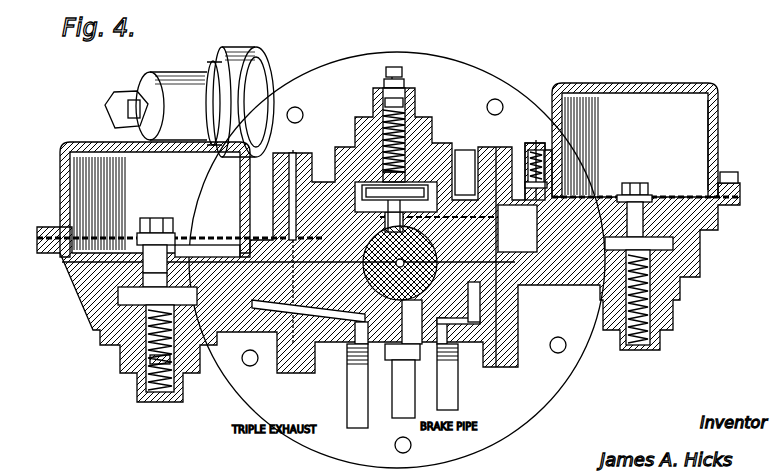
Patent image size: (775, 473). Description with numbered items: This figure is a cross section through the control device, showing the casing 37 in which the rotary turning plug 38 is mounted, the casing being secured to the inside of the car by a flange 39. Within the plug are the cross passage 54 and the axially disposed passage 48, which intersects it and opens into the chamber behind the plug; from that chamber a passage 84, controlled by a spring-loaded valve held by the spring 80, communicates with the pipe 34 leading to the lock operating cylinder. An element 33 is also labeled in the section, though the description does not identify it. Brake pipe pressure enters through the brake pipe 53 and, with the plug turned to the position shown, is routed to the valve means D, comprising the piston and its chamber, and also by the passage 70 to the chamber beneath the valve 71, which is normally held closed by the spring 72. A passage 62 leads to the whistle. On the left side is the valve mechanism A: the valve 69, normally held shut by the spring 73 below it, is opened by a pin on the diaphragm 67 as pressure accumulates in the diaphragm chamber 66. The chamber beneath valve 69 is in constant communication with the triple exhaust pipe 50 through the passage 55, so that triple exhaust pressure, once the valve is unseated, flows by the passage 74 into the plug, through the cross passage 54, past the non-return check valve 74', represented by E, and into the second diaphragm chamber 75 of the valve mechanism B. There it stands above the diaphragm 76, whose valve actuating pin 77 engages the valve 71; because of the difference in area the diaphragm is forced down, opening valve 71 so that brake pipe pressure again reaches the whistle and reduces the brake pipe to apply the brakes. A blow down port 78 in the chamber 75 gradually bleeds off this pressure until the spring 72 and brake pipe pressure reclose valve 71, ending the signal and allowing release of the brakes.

The slide valve 33 is at (396, 207).
The pipe 34 is at (452, 396).
The casing 37 is at (320, 180).
The rotary valve or turning plug 38 is at (408, 360).
The flange 39 is at (440, 62).
The axially disposed passage 48 is at (436, 240).
The triple exhaust pipe 50 is at (346, 393).
The brake pipe 53 is at (400, 410).
The cross passage 54 is at (375, 345).
The passage 55 is at (268, 320).
The passage 62 is at (460, 175).
The diaphragm chamber 66 is at (155, 199).
The diaphragm 67 is at (200, 237).
The valve 69 is at (103, 336).
The passage 70 is at (571, 256).
The valve 71 is at (660, 237).
The spring 72 is at (668, 310).
The spring 73 is at (145, 372).
The passage 74 is at (237, 325).
The non-return check valve 74' is at (523, 157).
The second diaphragm chamber 75 is at (655, 100).
The diaphragm 76 is at (605, 195).
The valve actuating pin 77 is at (652, 196).
The blow down port 78 is at (716, 115).
The spring 80 is at (420, 128).
The passage 84 is at (518, 305).
The valve mechanism A is at (114, 298).
The valve mechanism B is at (757, 195).
The valve means D is at (218, 62).
The non-return check valve E is at (536, 156).